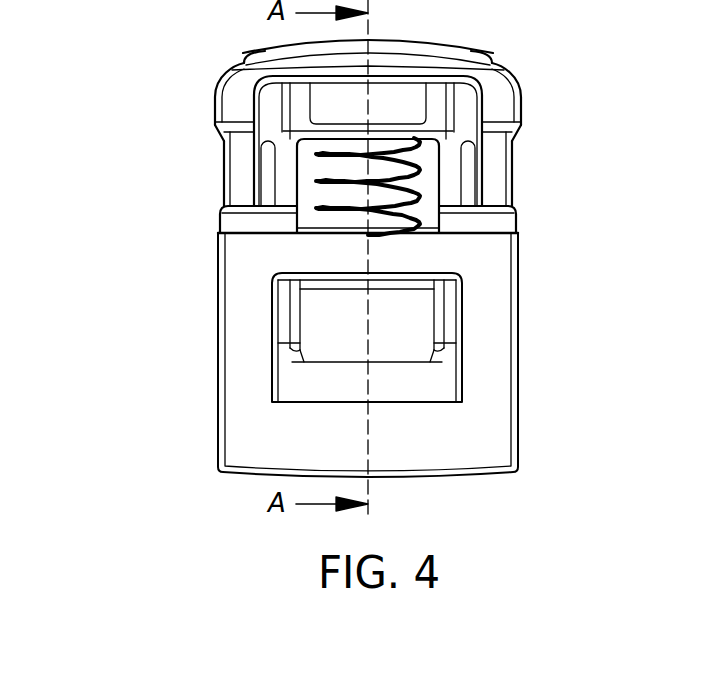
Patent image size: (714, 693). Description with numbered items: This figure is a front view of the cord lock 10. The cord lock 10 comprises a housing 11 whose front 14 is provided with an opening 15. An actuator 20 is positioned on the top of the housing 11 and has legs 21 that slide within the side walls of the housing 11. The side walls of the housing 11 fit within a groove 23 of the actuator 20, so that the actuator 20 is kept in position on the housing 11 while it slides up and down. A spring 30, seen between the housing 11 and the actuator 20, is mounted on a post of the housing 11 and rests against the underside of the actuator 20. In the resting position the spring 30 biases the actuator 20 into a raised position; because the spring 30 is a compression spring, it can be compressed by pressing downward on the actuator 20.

The cord lock 10 is at (166, 317).
The housing 11 is at (493, 325).
The front 14 is at (483, 435).
The opening 15 is at (426, 364).
The actuator 20 is at (198, 147).
The legs 21 is at (447, 181).
The groove 23 is at (264, 163).
The spring 30 is at (414, 195).